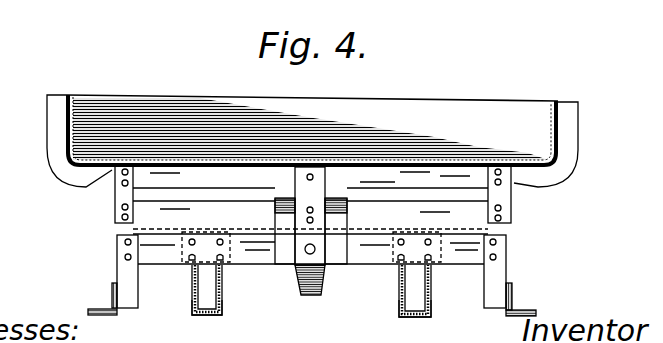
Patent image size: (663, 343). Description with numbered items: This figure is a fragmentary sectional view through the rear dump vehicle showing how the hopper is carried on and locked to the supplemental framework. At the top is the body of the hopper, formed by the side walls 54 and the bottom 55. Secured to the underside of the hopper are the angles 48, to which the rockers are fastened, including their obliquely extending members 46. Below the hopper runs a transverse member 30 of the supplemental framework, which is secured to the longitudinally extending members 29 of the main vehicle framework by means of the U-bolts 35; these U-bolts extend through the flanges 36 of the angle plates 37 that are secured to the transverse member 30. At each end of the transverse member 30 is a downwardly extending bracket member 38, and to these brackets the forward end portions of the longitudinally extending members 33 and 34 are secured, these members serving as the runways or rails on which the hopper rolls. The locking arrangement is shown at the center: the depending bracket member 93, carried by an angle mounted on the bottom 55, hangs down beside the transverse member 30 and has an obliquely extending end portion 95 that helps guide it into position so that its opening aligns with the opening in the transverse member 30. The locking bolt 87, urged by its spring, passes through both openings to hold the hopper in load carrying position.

The side walls 54 is at (91, 89).
The bottom 55 is at (310, 164).
The depending bracket member 93 is at (326, 184).
The locking bolt 87 is at (315, 254).
The obliquely extending end portion 95 is at (313, 281).
The obliquely extending members 46 is at (275, 200).
The angle plates 37 is at (213, 223).
The transverse members 30 is at (250, 252).
The angles 48 is at (104, 180).
The bracket member 38 is at (127, 277).
The longitudinally extending member 34 is at (97, 309).
The longitudinally extending member 33 is at (529, 312).
The flanges 36 is at (182, 264).
The longitudinally extending members 29 is at (195, 287).
The U-bolts 35 is at (195, 311).